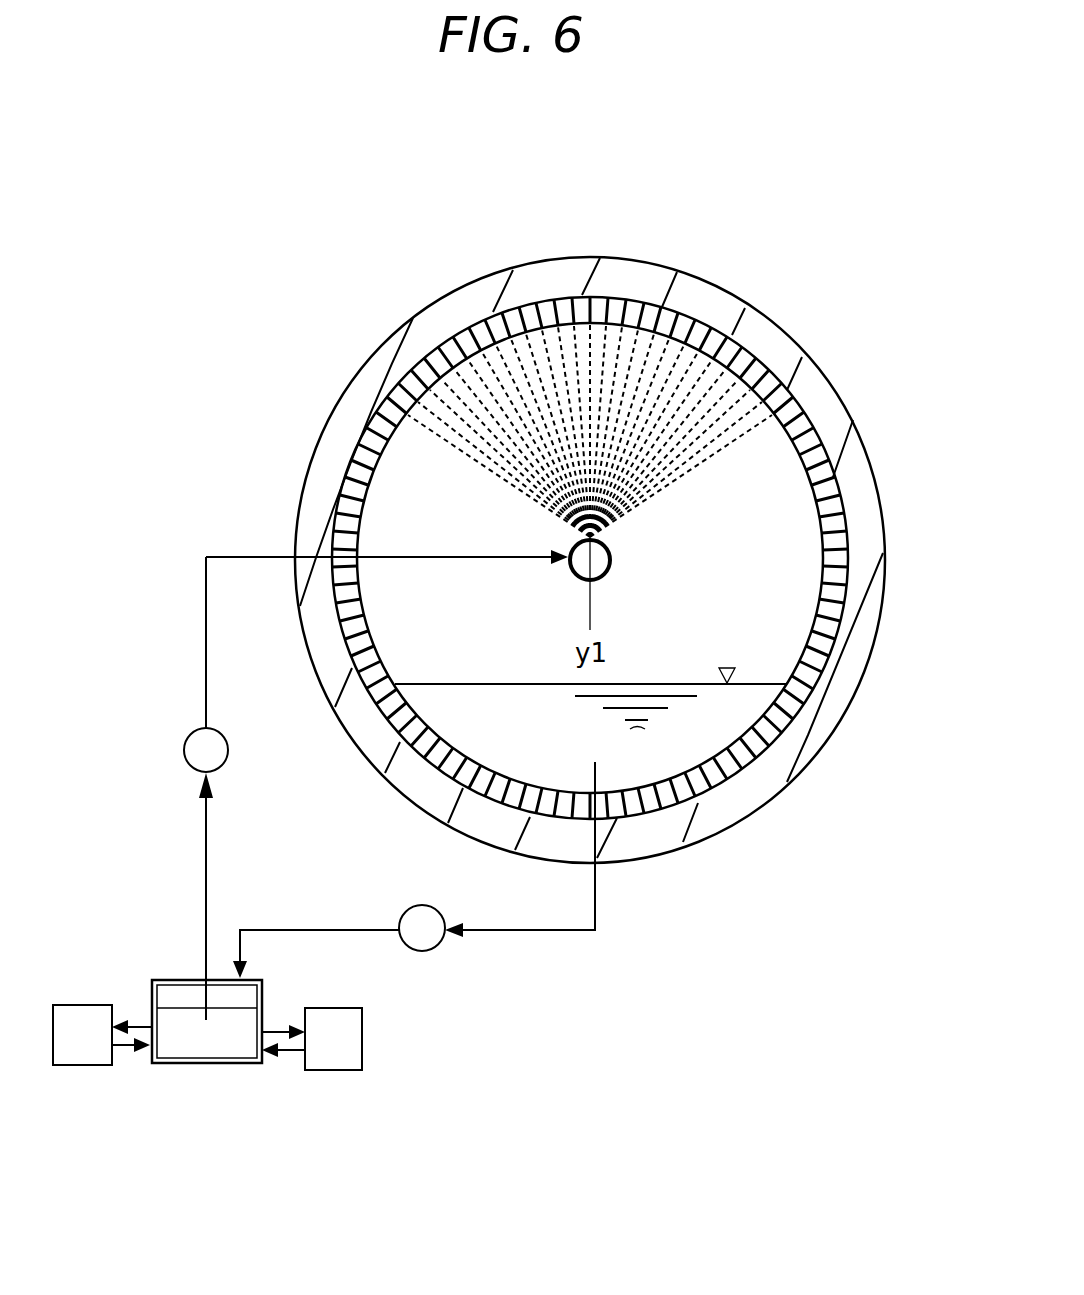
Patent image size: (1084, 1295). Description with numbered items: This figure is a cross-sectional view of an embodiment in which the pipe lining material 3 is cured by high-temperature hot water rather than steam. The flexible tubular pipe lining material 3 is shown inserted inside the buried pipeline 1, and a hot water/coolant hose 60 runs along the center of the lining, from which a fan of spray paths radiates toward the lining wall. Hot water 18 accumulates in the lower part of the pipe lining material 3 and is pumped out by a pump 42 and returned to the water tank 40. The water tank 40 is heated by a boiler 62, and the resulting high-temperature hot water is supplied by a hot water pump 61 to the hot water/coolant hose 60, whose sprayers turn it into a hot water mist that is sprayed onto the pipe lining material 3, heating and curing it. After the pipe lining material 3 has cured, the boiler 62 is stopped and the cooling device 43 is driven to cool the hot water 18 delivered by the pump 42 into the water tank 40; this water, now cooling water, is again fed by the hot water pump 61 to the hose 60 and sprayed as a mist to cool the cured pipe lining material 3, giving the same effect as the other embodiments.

The pipeline 1 is at (724, 290).
The pipe lining material 3 is at (452, 345).
The hot water/coolant hose 60 is at (608, 544).
The hot water 18 is at (660, 752).
The hot water pump 61 is at (230, 745).
The pump 42 is at (420, 951).
The water tank 40 is at (203, 1063).
The boiler 62 is at (80, 1067).
The cooling device 43 is at (345, 1070).